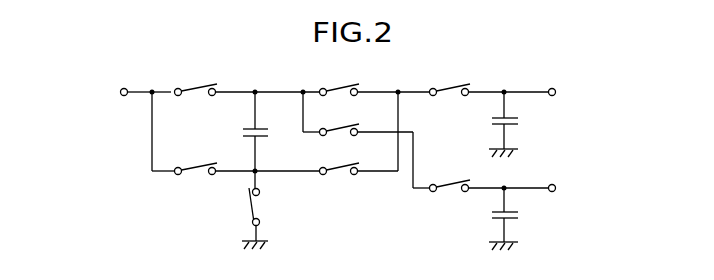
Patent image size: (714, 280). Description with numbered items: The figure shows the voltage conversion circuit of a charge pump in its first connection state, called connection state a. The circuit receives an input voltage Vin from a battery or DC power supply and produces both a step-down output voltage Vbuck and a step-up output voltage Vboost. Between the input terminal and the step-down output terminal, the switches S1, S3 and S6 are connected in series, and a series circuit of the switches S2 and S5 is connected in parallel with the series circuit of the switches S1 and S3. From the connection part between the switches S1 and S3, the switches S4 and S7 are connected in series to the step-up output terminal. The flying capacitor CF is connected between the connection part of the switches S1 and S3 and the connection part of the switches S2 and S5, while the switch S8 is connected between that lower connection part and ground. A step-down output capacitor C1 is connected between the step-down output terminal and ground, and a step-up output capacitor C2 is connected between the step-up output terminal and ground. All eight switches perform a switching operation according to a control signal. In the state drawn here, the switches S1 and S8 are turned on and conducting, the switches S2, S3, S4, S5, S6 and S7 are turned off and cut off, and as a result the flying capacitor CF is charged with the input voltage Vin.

The switch S1 is at (206, 86).
The switch S2 is at (206, 165).
The switch S3 is at (350, 86).
The switch S4 is at (350, 126).
The switch S5 is at (350, 165).
The switch S6 is at (460, 86).
The switch S7 is at (460, 182).
The switch S8 is at (262, 210).
The flying capacitor CF is at (266, 131).
The step-down output capacitor C1 is at (513, 124).
The step-up output capacitor C2 is at (513, 219).
The input voltage Vin is at (114, 92).
The step-down output voltage Vbuck is at (547, 85).
The step-up output voltage Vboost is at (550, 180).